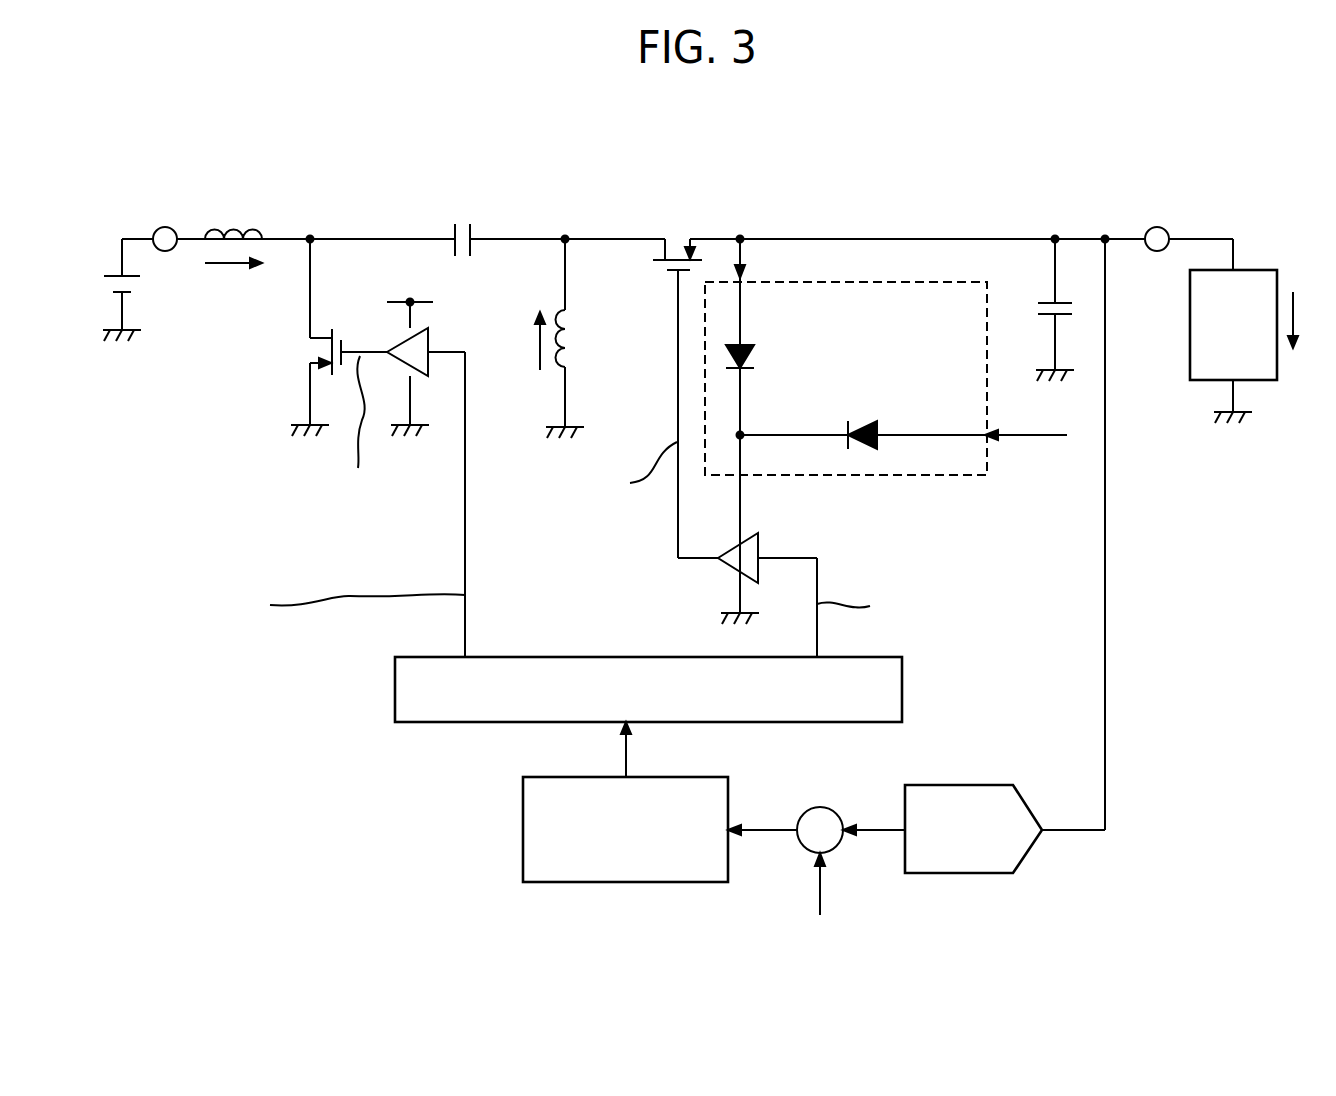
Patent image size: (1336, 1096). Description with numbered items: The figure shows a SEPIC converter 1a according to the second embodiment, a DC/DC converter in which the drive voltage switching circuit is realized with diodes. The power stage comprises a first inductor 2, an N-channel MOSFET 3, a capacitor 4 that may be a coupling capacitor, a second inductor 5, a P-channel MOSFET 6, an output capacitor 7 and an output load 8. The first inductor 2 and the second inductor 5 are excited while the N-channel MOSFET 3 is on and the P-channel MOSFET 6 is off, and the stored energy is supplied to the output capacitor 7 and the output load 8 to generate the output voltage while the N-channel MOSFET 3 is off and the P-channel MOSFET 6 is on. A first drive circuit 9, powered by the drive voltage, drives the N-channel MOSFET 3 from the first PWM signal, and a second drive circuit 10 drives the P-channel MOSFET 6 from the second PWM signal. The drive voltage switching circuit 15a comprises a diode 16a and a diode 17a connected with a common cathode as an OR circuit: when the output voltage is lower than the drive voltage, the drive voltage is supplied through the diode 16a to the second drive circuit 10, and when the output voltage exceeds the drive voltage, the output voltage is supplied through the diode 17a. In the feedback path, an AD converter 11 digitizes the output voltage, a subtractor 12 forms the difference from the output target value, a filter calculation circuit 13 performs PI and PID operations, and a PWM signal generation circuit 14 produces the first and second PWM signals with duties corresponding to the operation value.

The power conversion device 1a is at (709, 134).
The first inductor 2 is at (232, 226).
The N-channel MOSFET 3 is at (300, 352).
The capacitor 4 is at (460, 224).
The second inductor 5 is at (556, 366).
The P-channel MOSFET 6 is at (678, 238).
The output capacitor 7 is at (1060, 301).
The output load 8 is at (1250, 270).
The first drive circuit 9 is at (395, 340).
The second drive circuit 10 is at (725, 575).
The AD converter 11 is at (990, 785).
The subtractor 12 is at (830, 808).
The filter calculation circuit 13 is at (556, 884).
The PWM signal generation circuit 14 is at (395, 692).
The drive voltage switching circuit 15a is at (950, 478).
The diode 16a is at (866, 420).
The diode 17a is at (748, 345).